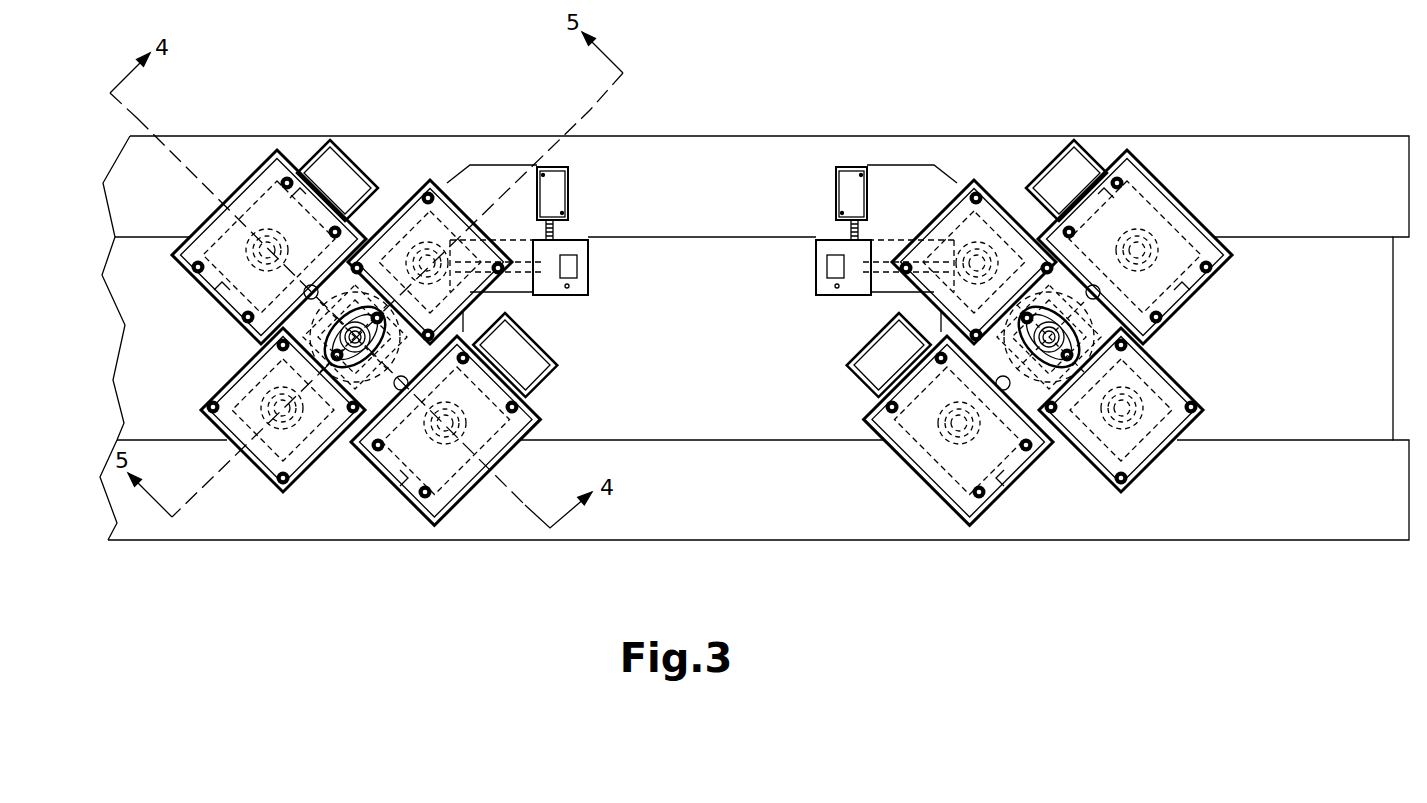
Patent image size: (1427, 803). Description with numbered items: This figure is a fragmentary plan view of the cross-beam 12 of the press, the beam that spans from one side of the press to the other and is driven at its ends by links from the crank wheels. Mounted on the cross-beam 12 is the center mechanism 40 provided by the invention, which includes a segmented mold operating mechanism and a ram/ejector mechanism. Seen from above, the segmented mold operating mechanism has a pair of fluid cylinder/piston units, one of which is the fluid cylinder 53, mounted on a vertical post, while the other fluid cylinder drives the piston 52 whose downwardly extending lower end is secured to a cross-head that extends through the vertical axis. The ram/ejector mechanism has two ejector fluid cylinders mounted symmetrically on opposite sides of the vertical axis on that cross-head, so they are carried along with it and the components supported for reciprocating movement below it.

The cross-beam 12 is at (733, 136).
The center mechanism 40 is at (763, 365).
The piston 52 is at (1180, 198).
The fluid cylinder 53 is at (232, 212).